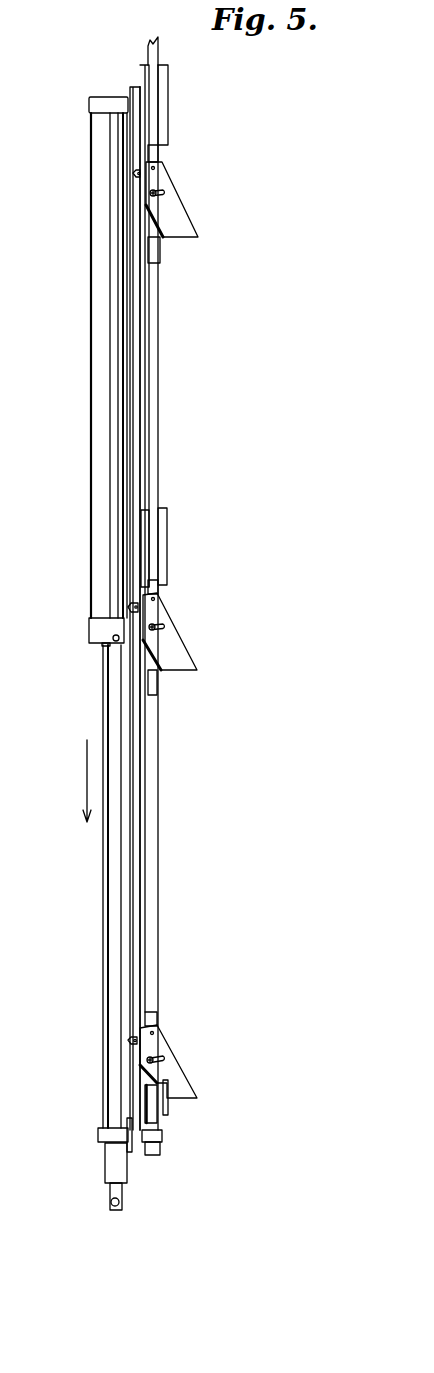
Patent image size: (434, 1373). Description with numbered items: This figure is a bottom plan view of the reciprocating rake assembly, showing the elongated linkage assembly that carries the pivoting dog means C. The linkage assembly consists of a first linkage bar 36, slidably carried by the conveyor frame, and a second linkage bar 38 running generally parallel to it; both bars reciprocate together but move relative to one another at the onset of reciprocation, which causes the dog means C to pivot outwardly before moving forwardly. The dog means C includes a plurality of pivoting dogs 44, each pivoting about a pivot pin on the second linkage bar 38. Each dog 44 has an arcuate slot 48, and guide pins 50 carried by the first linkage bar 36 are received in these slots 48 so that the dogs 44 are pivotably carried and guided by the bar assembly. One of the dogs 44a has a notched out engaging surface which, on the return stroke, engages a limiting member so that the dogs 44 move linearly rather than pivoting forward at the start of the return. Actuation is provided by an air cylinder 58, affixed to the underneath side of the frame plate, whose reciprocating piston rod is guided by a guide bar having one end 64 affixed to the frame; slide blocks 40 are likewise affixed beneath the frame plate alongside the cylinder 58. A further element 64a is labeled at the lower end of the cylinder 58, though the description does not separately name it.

The air cylinder 58 is at (91, 388).
The bracket 64a is at (113, 637).
The slide blocks 40 is at (163, 548).
The pivoting dogs 44 is at (184, 207).
The first linkage bar 36 is at (158, 800).
The second linkage bar 38 is at (138, 889).
The guide pins 50 is at (156, 1032).
The arcuate slot 48 is at (165, 1058).
The dog means C is at (192, 1078).
The dog with notched engaging surface 44a is at (189, 1100).
The end of guide bar 64 is at (122, 1203).